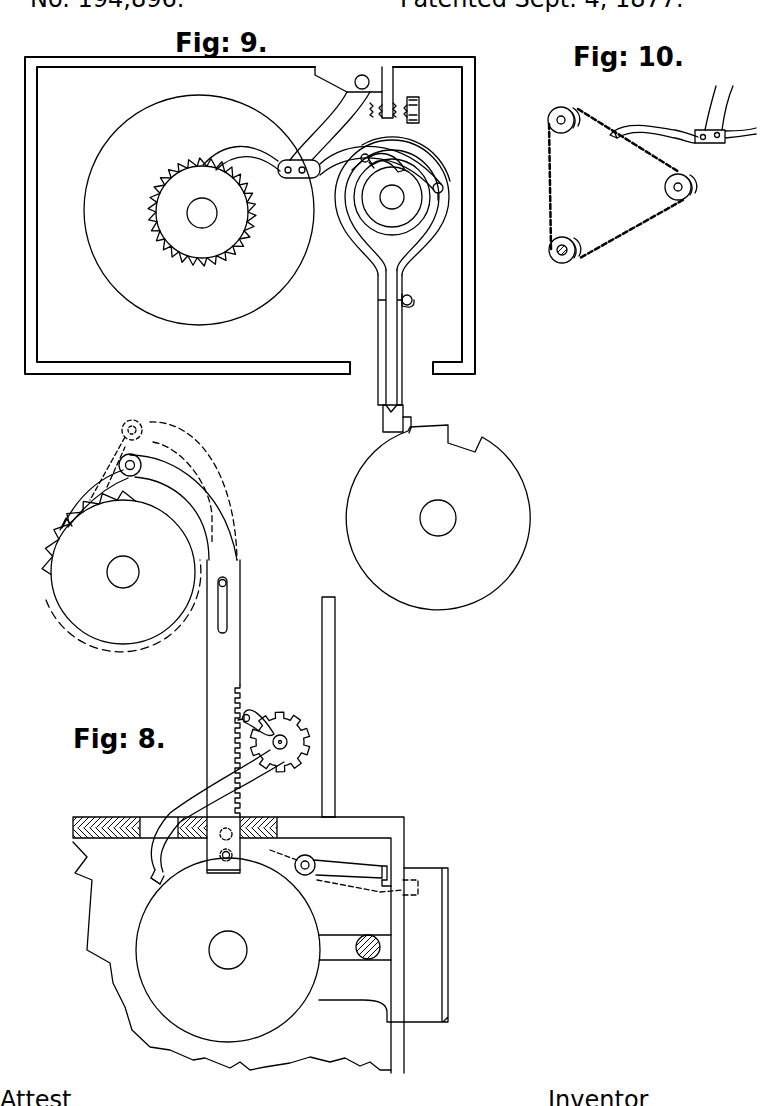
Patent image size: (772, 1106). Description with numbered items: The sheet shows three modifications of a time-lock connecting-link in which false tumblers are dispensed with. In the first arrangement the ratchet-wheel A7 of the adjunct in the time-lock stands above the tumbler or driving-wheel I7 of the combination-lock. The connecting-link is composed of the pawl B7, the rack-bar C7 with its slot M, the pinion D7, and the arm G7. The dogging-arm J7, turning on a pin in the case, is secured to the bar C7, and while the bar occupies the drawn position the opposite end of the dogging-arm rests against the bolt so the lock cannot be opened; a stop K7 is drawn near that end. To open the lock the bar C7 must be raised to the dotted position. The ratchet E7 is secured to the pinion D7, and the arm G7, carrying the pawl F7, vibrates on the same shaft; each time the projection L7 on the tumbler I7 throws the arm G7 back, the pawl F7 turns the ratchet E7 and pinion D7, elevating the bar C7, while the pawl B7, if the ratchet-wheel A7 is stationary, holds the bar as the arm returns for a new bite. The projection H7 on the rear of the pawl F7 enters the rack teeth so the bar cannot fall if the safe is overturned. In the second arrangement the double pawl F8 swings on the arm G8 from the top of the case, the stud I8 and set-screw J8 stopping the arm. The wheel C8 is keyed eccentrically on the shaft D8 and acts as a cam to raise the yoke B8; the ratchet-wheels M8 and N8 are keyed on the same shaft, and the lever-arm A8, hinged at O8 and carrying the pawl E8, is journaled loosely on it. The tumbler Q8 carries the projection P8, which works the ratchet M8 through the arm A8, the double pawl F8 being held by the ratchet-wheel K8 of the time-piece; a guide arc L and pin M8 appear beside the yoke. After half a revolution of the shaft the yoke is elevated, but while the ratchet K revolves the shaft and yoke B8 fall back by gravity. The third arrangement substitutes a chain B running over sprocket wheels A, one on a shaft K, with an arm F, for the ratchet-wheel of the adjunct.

In FIG. 9, the lever-arm A8 is at (392, 207).
In FIG. 9, the yoke B8 is at (389, 337).
In FIG. 9, the wheel C8 is at (392, 197).
In FIG. 9, the shaft D8 is at (392, 197).
In FIG. 9, the pawl E8 is at (386, 148).
In FIG. 9, the double pawl F8 is at (322, 163).
In FIG. 9, the arm G8 is at (330, 122).
In FIG. 9, the stud I8 is at (388, 92).
In FIG. 9, the set-screw J8 is at (422, 108).
In FIG. 9, the ratchet-wheel of the time-piece K8 is at (202, 212).
In FIG. 9, the arc guide L is at (406, 159).
In FIG. 9, the ratchet-wheel M8 is at (430, 181).
In FIG. 9, the ratchet-wheel N8 is at (360, 159).
In FIG. 9, the hinge O8 is at (417, 305).
In FIG. 9, the projection P8 is at (415, 417).
In FIG. 9, the tumbler Q8 is at (438, 517).
In FIG. 10, the pulleys A is at (622, 185).
In FIG. 10, the chain B is at (552, 184).
In FIG. 10, the arm F is at (683, 114).
In FIG. 10, the ratchet K is at (556, 263).
In FIG. 8, the ratchet-wheel A7 is at (121, 571).
In FIG. 8, the pawl B7 is at (95, 484).
In FIG. 8, the rack-bar C7 is at (184, 646).
In FIG. 8, the slot M is at (224, 605).
In FIG. 8, the pinion D7 is at (279, 743).
In FIG. 8, the ratchet E7 is at (289, 741).
In FIG. 8, the pawl F7 is at (269, 722).
In FIG. 8, the projection H7 is at (234, 717).
In FIG. 8, the arm G7 is at (196, 796).
In FIG. 8, the projection L7 is at (166, 870).
In FIG. 8, the tumbler I7 is at (263, 950).
In FIG. 8, the dogging-arm J7 is at (344, 868).
In FIG. 8, the stop K7 is at (382, 888).